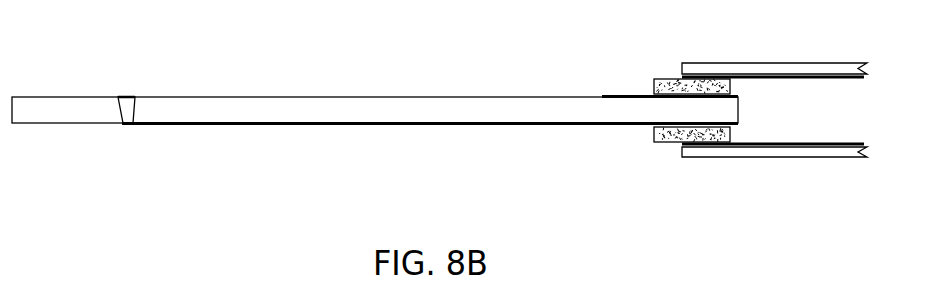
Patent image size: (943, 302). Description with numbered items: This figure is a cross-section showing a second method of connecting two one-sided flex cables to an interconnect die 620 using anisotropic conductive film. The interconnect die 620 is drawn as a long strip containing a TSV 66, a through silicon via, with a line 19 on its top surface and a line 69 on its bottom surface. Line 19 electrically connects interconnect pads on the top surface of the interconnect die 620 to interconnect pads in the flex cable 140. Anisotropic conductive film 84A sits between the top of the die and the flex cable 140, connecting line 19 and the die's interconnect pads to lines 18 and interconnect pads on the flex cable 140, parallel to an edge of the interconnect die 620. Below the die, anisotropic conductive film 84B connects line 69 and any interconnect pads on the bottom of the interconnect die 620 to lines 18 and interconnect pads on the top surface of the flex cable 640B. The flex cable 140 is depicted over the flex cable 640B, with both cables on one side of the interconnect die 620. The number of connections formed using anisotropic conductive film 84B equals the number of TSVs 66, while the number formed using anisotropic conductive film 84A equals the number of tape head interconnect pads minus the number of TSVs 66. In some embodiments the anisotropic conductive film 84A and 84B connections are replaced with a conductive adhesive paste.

The interconnect die 620 is at (408, 111).
The TSV 66 is at (127, 95).
The line 69 is at (272, 128).
The line 19 is at (602, 96).
The anisotropic conductive film 84A is at (660, 79).
The anisotropic conductive film 84B is at (661, 141).
The flex cable 140 is at (797, 62).
The flex cable 640B is at (808, 158).
The line 18 is at (847, 79).